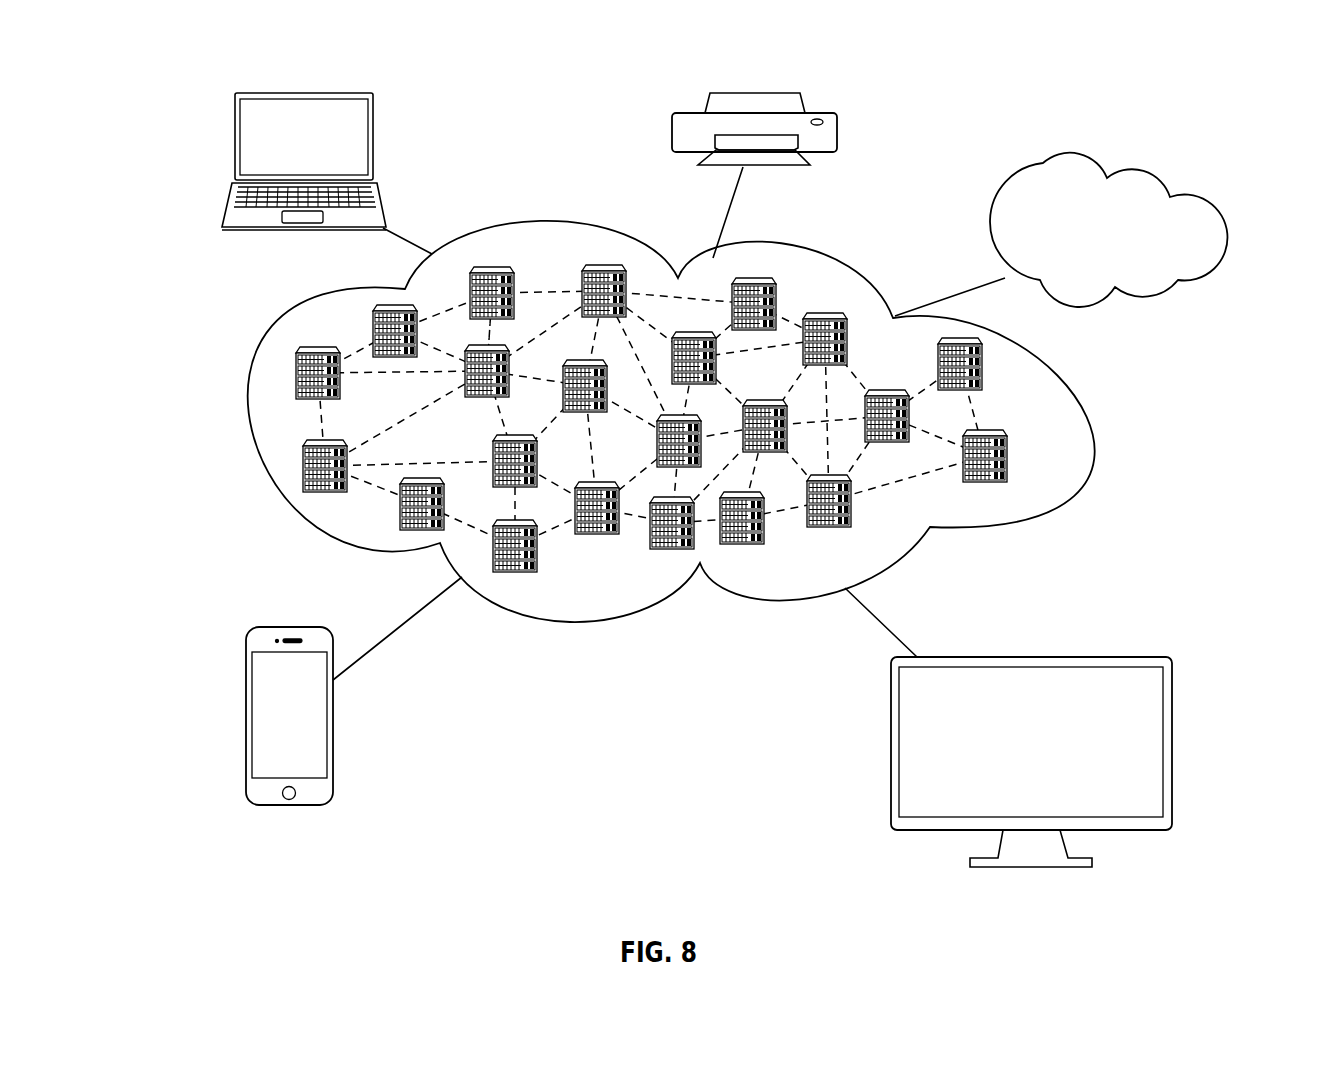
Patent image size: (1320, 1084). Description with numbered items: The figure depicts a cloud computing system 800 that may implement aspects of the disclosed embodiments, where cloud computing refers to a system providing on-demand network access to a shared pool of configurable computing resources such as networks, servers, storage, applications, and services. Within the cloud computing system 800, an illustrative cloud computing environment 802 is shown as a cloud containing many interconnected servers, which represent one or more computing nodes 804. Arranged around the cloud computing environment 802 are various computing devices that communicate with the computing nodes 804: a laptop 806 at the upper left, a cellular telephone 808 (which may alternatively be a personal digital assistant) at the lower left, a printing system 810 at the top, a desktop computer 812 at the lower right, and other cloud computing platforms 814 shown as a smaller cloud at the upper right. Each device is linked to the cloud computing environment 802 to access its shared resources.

The cloud computing system 800 is at (1179, 104).
The cloud computing environment 802 is at (243, 412).
The computing node 804 is at (998, 482).
The laptop 806 is at (235, 156).
The cellular telephone 808 is at (246, 710).
The printing system 810 is at (672, 126).
The desktop computer 812 is at (1172, 767).
The other cloud computing platform 814 is at (1043, 163).